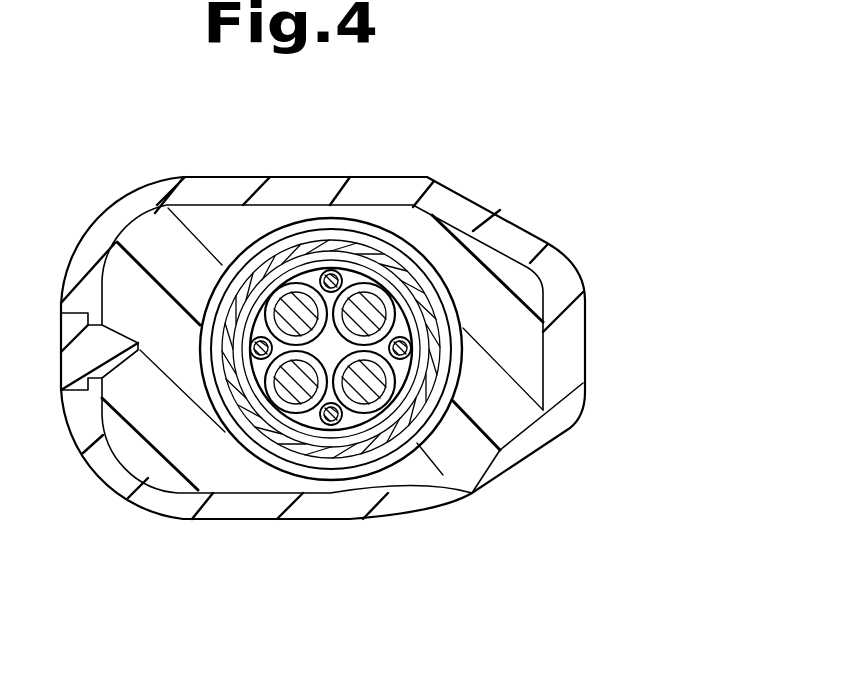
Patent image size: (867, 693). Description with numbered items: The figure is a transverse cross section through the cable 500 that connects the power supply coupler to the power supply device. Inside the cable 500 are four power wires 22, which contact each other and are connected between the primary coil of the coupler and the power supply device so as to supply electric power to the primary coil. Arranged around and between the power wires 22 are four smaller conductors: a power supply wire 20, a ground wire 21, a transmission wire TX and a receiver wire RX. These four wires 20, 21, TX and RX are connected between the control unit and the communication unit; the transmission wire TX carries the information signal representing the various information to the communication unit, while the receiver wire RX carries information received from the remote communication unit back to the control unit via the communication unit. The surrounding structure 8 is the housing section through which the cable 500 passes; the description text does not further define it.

The connector housing 8 is at (107, 214).
The cable 500 is at (418, 248).
The power supply wire 20 is at (327, 272).
The ground wire 21 is at (334, 425).
The power wires 22 is at (268, 305).
The transmission wire TX is at (250, 344).
The receiver wire RX is at (411, 356).